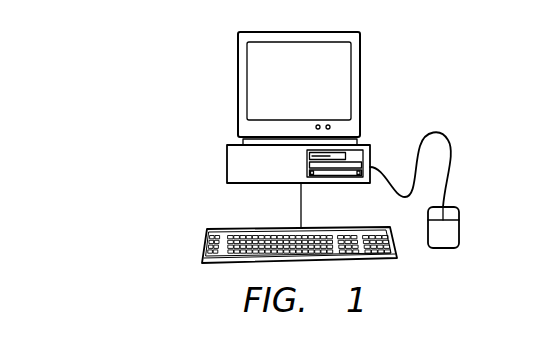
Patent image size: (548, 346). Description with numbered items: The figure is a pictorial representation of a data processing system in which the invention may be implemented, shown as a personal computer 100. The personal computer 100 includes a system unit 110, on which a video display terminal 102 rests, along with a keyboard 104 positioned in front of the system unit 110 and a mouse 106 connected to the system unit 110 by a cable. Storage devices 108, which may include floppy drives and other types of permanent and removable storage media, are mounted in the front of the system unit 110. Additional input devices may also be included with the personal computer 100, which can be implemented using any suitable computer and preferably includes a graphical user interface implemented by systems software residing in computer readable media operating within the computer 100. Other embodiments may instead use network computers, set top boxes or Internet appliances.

The personal computer 100 is at (403, 75).
The video display terminal 102 is at (238, 82).
The keyboard 104 is at (204, 245).
The mouse 106 is at (459, 227).
The storage devices 108 is at (336, 177).
The system unit 110 is at (227, 163).